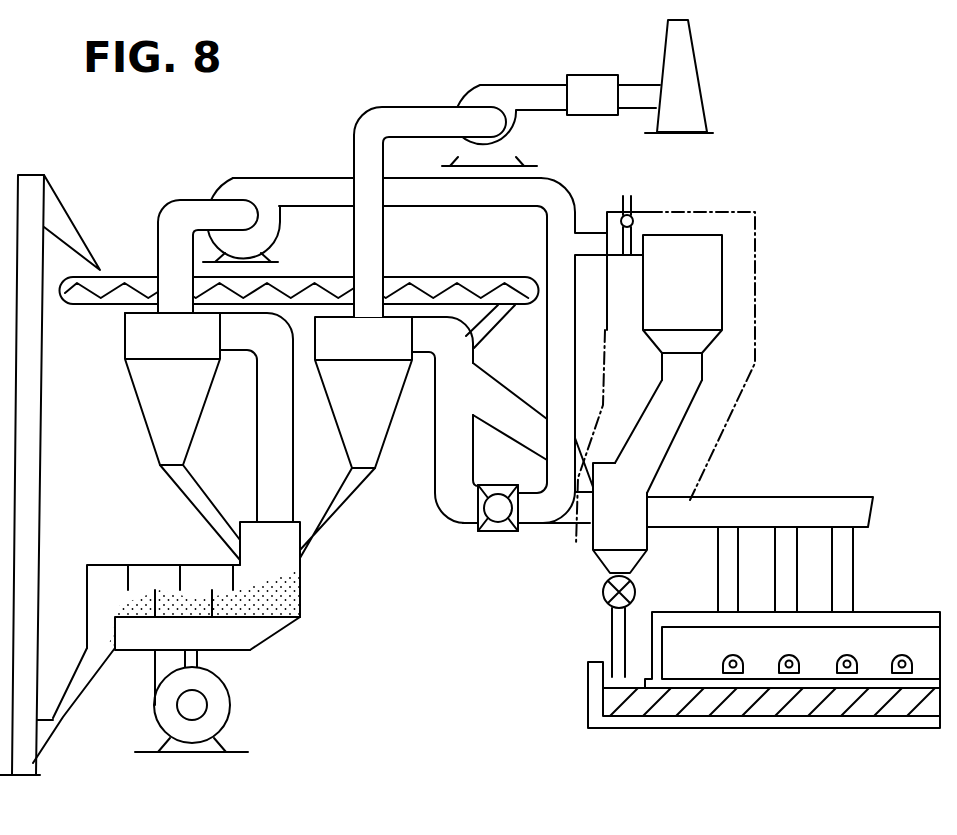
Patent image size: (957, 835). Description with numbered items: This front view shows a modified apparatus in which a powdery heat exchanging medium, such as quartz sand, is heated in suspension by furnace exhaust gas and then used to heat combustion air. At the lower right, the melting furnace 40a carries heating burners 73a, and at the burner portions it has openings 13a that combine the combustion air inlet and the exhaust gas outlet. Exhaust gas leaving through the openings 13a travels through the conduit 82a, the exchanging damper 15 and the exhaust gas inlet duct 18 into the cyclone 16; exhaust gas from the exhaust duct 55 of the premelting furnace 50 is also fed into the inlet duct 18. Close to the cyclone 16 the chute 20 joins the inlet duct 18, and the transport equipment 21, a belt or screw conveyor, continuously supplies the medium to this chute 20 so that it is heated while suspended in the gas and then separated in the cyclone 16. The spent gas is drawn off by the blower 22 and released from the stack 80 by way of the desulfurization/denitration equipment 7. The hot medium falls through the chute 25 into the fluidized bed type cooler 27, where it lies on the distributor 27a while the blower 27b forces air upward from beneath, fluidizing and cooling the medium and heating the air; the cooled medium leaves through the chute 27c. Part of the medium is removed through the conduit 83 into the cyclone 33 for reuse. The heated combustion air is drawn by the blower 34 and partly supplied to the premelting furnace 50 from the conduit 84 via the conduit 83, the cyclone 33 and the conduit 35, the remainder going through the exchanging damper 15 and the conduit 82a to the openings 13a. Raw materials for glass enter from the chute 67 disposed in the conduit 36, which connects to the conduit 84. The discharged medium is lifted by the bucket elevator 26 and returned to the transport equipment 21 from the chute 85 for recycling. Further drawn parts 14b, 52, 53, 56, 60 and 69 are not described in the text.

The desulfurization/denitration equipment 7 is at (593, 88).
The opening 13a is at (733, 660).
The conduit junction 14b is at (467, 528).
The exchanging damper 15 is at (497, 533).
The cyclone 16 is at (370, 433).
The exhaust gas inlet duct 18 is at (442, 473).
The chute 20 is at (508, 318).
The transport equipment 21 is at (477, 277).
The blower 22 is at (517, 128).
The chute 25 is at (323, 528).
The bucket elevator 26 is at (32, 393).
The fluidized bed type cooler 27 is at (172, 578).
The distributor 27a is at (267, 620).
The blower 27b is at (218, 705).
The chute 27c is at (72, 695).
The cyclone 33 is at (187, 422).
The blower 34 is at (267, 227).
The conduit 35 is at (305, 178).
The conduit 36 is at (591, 246).
The melting furnace 40a is at (898, 645).
The premelting furnace 50 is at (743, 260).
The hopper 52 is at (697, 315).
The chute 53 is at (658, 413).
The exhaust duct 55 is at (578, 440).
The hopper 56 is at (633, 537).
The valve 60 is at (634, 215).
The chute 67 is at (622, 196).
The pipe 69 is at (628, 271).
The heating burner 73a is at (733, 668).
The stack 80 is at (685, 52).
The conduit 82a is at (792, 498).
The conduit 83 is at (267, 465).
The conduit 84 is at (560, 272).
The chute 85 is at (60, 210).